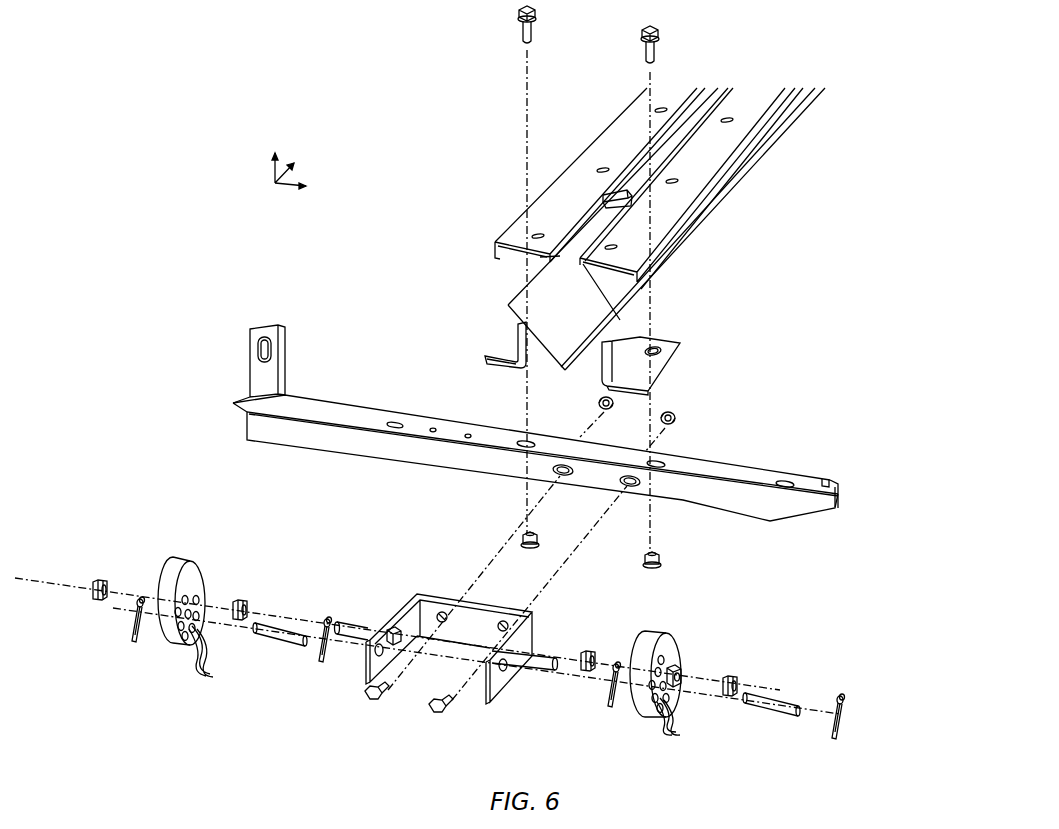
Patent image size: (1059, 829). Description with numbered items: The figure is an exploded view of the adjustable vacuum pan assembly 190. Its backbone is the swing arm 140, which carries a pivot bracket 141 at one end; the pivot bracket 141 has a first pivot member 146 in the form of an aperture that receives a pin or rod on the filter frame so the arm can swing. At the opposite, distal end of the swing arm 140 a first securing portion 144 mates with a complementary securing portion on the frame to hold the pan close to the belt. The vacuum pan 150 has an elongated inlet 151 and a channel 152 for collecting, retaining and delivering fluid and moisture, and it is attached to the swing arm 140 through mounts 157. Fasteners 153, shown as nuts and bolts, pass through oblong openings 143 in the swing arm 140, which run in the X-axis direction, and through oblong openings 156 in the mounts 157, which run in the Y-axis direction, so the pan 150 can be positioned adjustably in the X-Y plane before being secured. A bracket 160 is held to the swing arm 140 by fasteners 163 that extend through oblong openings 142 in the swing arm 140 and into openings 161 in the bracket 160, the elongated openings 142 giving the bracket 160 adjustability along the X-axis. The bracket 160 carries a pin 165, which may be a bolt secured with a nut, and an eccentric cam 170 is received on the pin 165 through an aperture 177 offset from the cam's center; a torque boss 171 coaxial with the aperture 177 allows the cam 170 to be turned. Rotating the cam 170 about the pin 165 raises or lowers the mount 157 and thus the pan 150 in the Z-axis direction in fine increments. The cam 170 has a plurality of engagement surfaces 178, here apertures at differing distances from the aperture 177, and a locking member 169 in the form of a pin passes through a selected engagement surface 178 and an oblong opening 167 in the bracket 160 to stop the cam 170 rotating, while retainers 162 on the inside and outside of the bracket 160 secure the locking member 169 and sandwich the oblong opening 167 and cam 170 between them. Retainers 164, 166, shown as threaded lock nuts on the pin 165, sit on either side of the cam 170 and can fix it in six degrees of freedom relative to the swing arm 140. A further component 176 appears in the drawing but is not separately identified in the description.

The adjustable vacuum pan assembly 190 is at (376, 60).
The vacuum pan 150 is at (717, 193).
The elongated inlet 151 is at (584, 237).
The channel 152 is at (553, 298).
The fastener 153 is at (528, 30).
The oblong opening 156 is at (658, 345).
The mount 157 is at (668, 341).
The fastener 163 is at (601, 403).
The swing arm 140 is at (349, 476).
The pivot bracket 141 is at (279, 325).
The oblong opening 142 is at (563, 473).
The oblong opening 143 is at (520, 443).
The first securing portion 144 is at (826, 478).
The first pivot member 146 is at (272, 349).
The bracket 160 is at (478, 614).
The opening 161 is at (501, 630).
The retainer 162 is at (134, 630).
The retainer 164 is at (240, 599).
The pin 165 is at (349, 622).
The retainer 166 is at (102, 580).
The oblong opening 167 is at (381, 652).
The locking member 169 is at (278, 637).
The cam 170 is at (650, 720).
The torque boss 171 is at (676, 667).
The left wheel 176 is at (190, 556).
The aperture 177 is at (196, 600).
The engagement surface 178 is at (205, 665).